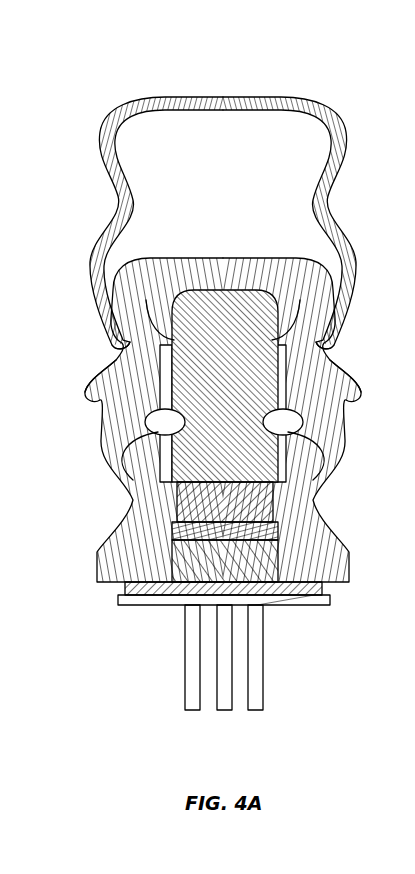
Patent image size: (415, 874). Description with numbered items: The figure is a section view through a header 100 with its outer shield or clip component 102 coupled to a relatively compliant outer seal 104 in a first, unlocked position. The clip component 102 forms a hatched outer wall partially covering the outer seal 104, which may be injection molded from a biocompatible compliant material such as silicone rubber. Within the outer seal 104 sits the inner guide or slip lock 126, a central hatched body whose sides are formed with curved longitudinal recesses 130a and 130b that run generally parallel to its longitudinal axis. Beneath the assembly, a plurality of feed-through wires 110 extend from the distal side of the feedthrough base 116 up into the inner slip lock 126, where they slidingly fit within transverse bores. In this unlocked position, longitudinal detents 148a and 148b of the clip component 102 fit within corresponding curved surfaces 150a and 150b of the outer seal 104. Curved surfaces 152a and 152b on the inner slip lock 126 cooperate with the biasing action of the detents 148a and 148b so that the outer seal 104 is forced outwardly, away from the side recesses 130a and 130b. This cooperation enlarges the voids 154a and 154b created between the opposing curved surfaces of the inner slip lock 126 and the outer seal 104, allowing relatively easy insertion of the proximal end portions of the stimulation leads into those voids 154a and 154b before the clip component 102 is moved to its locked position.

The header 100 is at (116, 38).
The clip component 102 is at (252, 97).
The outer seal 104 is at (100, 445).
The feed-through wires 110 is at (265, 675).
The feedthrough base 116 is at (124, 606).
The inner slip lock 126 is at (275, 470).
The curved longitudinal recess 130a is at (165, 420).
The curved longitudinal recess 130b is at (283, 420).
The longitudinal detent 148a is at (118, 347).
The longitudinal detent 148b is at (327, 347).
The curved surface 150a is at (120, 345).
The curved surface 150b is at (325, 345).
The curved surface 152a is at (172, 338).
The curved surface 152b is at (274, 338).
The void 154a is at (158, 440).
The void 154b is at (288, 440).